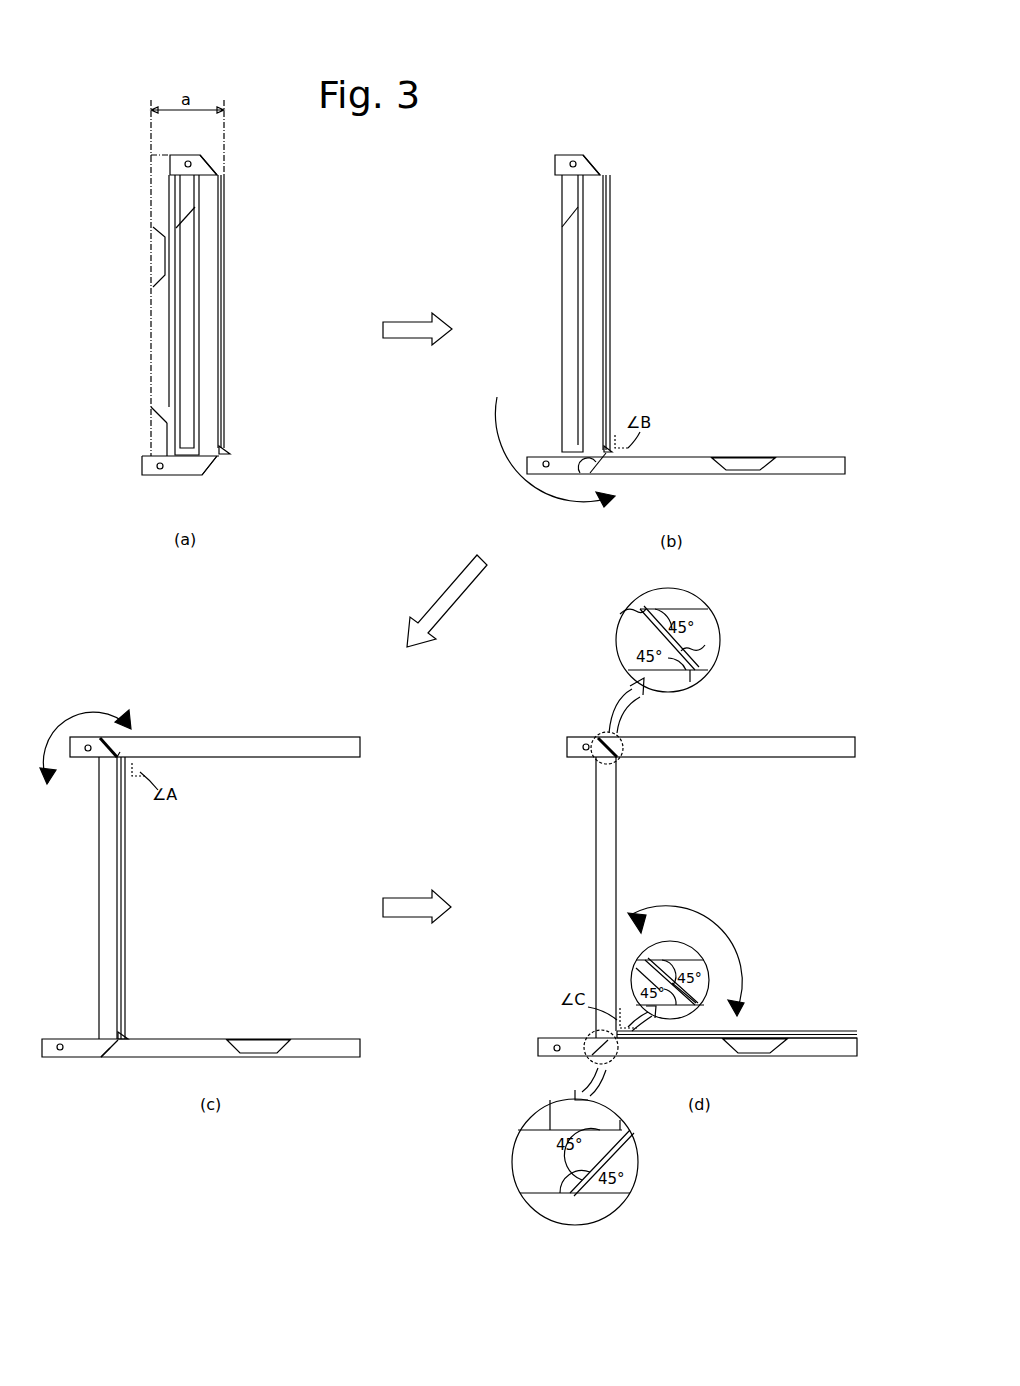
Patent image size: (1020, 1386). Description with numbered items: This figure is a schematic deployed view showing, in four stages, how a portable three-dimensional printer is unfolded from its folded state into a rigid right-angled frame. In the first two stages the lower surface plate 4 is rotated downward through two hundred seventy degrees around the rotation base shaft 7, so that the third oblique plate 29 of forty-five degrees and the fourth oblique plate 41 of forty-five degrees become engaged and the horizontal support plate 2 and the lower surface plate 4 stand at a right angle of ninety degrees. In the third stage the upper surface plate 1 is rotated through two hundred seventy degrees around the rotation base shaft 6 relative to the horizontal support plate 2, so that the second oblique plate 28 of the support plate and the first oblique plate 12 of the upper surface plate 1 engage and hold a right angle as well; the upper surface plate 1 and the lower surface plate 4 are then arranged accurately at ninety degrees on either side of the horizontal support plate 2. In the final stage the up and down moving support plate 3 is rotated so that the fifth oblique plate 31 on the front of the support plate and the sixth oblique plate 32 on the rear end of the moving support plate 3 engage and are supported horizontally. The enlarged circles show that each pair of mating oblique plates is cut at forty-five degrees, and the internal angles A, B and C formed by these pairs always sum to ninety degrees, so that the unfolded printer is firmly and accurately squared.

The upper surface plate 1 is at (178, 250).
The horizontal support plate 2 is at (214, 432).
The up and down moving support plate 3 is at (226, 360).
The lower surface plate 4 is at (160, 306).
The rotation base shaft 6 is at (189, 161).
The rotation base shaft 7 is at (160, 470).
The first oblique plate 12 is at (180, 210).
The second oblique plate 28 is at (212, 160).
The third oblique plate 29 is at (210, 472).
The fifth oblique plate 31 is at (640, 972).
The sixth oblique plate 32 is at (700, 962).
The fourth oblique plate 41 is at (156, 414).